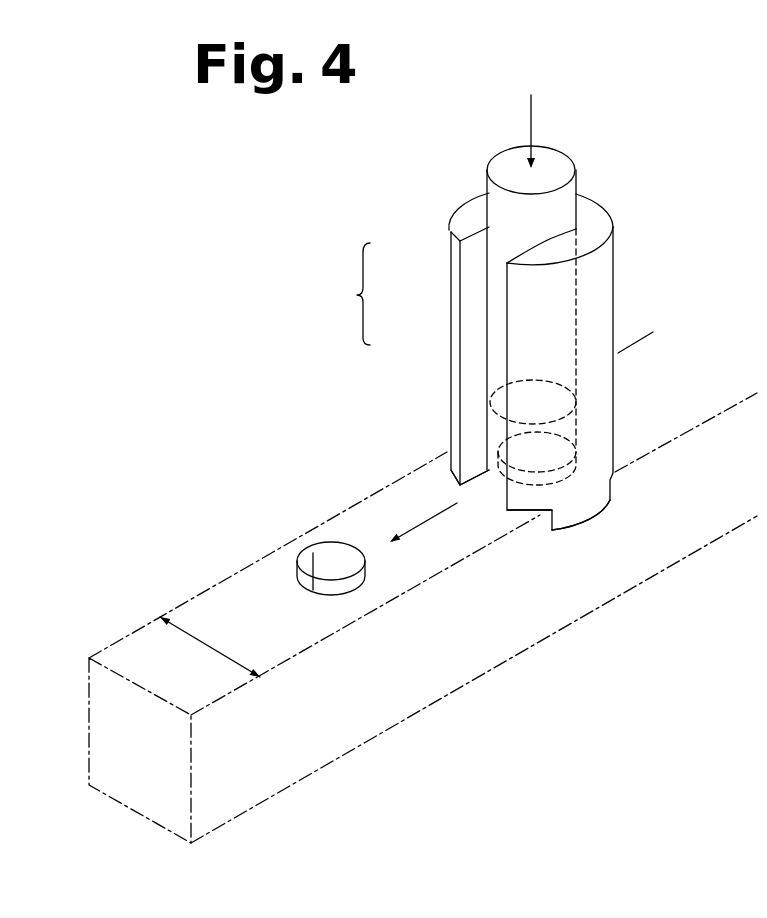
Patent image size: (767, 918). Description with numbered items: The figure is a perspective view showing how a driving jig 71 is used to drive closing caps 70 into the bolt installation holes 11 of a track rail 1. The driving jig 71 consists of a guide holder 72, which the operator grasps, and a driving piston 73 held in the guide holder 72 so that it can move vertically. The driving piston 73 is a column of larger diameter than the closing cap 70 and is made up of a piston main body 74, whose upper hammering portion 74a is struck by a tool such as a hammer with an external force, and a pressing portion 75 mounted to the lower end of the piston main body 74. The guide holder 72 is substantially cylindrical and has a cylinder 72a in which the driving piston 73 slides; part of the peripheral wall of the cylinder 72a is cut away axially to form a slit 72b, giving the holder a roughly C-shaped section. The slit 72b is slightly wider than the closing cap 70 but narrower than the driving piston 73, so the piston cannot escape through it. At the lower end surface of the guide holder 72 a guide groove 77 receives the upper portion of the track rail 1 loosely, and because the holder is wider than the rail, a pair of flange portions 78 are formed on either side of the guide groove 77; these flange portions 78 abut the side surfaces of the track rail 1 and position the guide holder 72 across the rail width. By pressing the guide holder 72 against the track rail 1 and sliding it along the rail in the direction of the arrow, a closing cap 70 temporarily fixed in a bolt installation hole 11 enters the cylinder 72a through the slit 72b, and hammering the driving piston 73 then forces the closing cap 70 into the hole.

The track rail 1 is at (225, 577).
The bolt installation hole 11 is at (296, 553).
The closing cap 70 is at (328, 556).
The driving jig 71 is at (509, 387).
The guide holder 72 is at (614, 270).
The cylinder 72a is at (488, 237).
The slit 72b is at (473, 450).
The driving piston 73 is at (475, 274).
The piston main body 74 is at (503, 267).
The hammering portion 74a is at (557, 158).
The pressing portion 75 is at (488, 426).
The guide groove 77 is at (513, 512).
The flange portion 78 is at (593, 507).